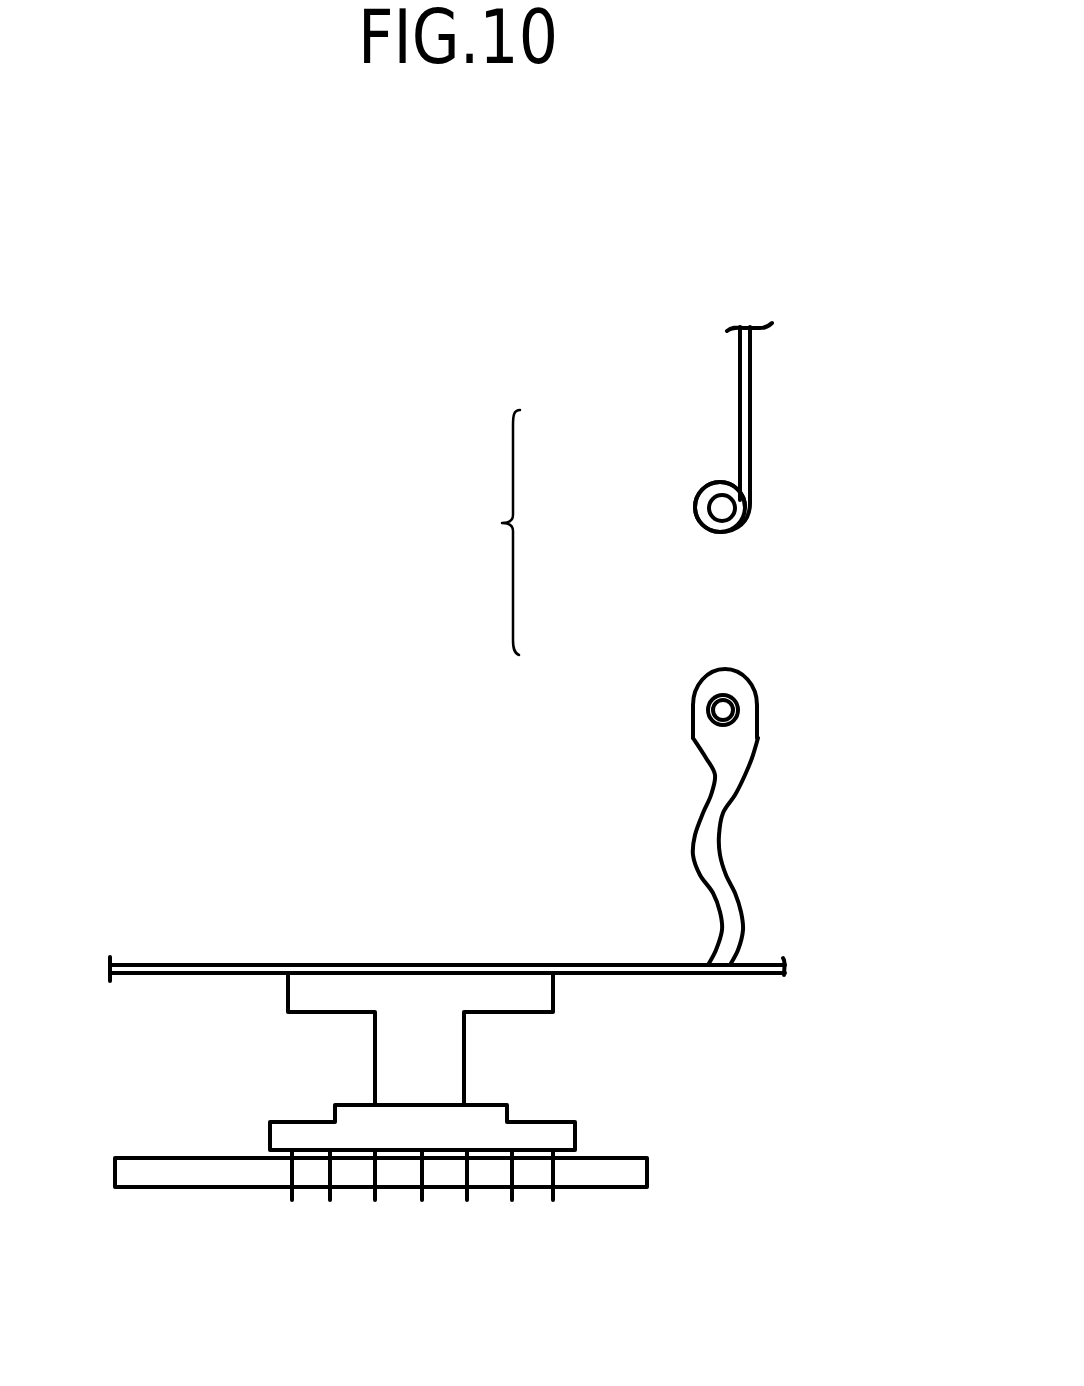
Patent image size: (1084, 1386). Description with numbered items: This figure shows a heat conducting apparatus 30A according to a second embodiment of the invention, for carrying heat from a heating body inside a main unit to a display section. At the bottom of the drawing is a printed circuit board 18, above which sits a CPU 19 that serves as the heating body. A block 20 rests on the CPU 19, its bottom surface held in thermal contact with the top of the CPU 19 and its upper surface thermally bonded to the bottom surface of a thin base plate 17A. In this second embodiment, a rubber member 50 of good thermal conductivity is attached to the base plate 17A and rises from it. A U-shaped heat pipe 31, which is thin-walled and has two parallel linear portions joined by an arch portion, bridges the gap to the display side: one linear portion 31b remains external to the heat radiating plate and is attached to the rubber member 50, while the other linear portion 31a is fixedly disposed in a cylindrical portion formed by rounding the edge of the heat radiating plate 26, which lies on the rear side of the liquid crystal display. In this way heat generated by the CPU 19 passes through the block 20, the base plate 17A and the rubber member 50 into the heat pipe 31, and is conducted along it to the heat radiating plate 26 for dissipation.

The base plate 17A is at (170, 965).
The printed circuit board 18 is at (623, 1175).
The CPU 19 is at (538, 1130).
The block 20 is at (385, 1040).
The heat radiating plate 26 is at (755, 388).
The heat conducting apparatus 30A is at (778, 842).
The heat pipe 31 is at (471, 532).
The linear portion 31a is at (703, 490).
The linear portion 31b is at (714, 700).
The rubber member 50 is at (735, 797).